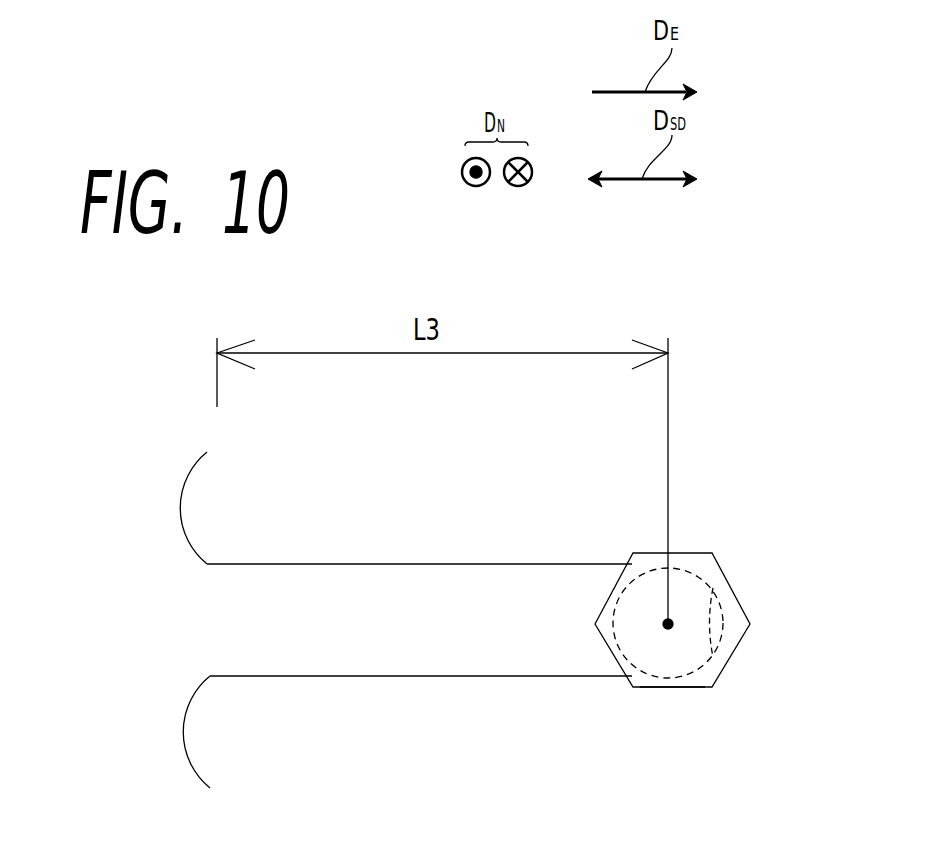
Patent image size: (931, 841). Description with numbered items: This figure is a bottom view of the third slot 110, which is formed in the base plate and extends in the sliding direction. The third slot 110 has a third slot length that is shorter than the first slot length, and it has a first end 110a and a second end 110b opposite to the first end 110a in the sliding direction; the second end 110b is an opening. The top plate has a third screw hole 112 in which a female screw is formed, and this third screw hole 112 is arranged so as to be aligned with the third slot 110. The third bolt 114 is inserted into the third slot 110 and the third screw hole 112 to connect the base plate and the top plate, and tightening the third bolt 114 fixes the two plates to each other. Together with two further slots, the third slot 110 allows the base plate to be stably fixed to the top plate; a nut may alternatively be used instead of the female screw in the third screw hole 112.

The third slot 110 is at (460, 652).
The first end 110a is at (722, 576).
The second end 110b is at (207, 627).
The third screw hole 112 is at (732, 660).
The third bolt 114 is at (677, 688).